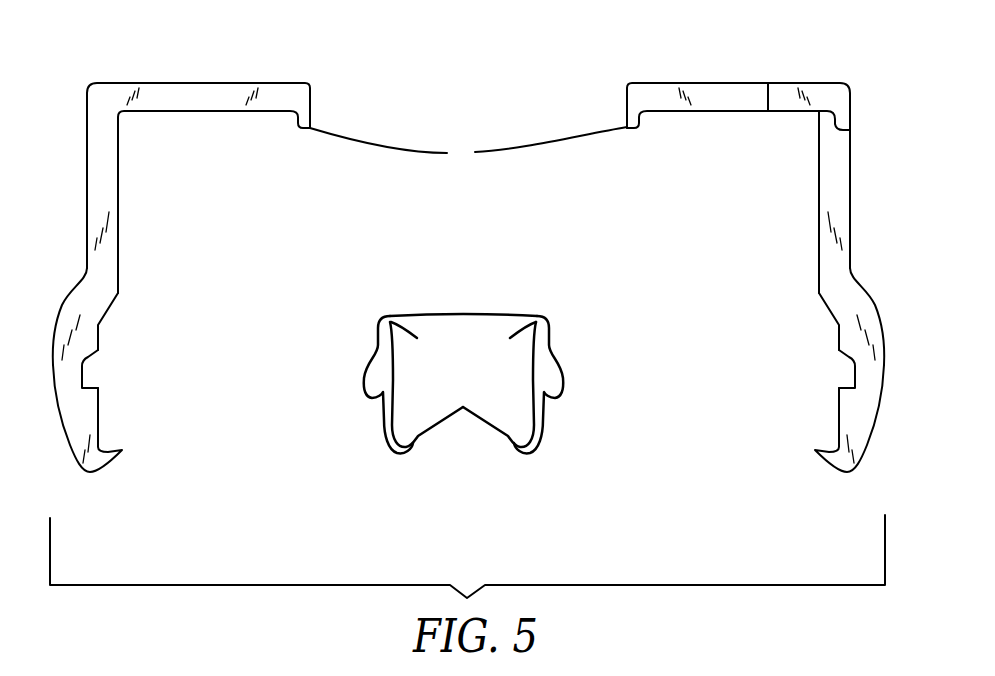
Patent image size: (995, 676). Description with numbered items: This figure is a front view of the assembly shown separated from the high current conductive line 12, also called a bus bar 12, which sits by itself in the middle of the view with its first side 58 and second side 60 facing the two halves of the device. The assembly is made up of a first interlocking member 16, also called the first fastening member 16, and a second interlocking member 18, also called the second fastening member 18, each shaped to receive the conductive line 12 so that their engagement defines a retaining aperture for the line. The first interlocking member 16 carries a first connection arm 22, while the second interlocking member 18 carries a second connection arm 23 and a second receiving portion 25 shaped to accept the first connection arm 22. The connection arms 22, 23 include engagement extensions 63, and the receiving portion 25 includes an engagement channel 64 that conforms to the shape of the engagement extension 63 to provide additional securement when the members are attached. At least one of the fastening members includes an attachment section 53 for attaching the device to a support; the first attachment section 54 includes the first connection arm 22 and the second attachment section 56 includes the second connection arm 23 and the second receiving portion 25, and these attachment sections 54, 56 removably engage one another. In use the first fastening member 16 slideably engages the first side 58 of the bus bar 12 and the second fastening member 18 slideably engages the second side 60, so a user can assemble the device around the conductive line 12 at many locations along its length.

The high current conductive line 12 is at (457, 442).
The first interlocking member 16 is at (183, 291).
The second interlocking member 18 is at (729, 291).
The first connection arm 22 is at (308, 84).
The second connection arm 23 is at (698, 83).
The second receiving portion 25 is at (810, 121).
The attachment section 53 is at (181, 216).
The first attachment section 54 is at (184, 145).
The second attachment section 56 is at (722, 137).
The first side 58 is at (362, 411).
The second side 60 is at (554, 413).
The engagement extension 63 is at (468, 147).
The engagement channel 64 is at (828, 125).